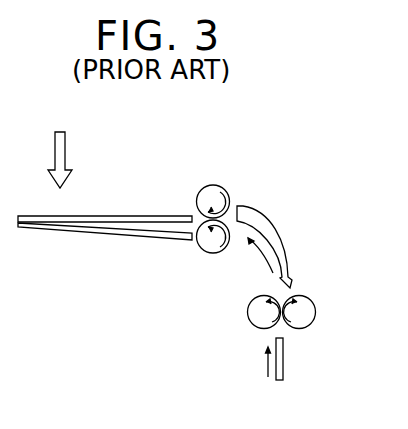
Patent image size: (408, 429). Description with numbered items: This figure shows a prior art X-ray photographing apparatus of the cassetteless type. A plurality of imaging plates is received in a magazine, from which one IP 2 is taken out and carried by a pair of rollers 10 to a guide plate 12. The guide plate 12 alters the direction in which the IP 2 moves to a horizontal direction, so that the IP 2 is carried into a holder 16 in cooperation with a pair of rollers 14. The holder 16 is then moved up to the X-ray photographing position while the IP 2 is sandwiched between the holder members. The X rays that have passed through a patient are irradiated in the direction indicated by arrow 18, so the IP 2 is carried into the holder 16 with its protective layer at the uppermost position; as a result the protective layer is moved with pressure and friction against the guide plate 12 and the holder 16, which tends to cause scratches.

The IP (imaging plate) 2 is at (283, 375).
The pair of rollers 10 is at (250, 315).
The guide plate 12 is at (273, 231).
The pair of rollers 14 is at (220, 188).
The holder 16 is at (127, 213).
The arrow 18 is at (58, 154).